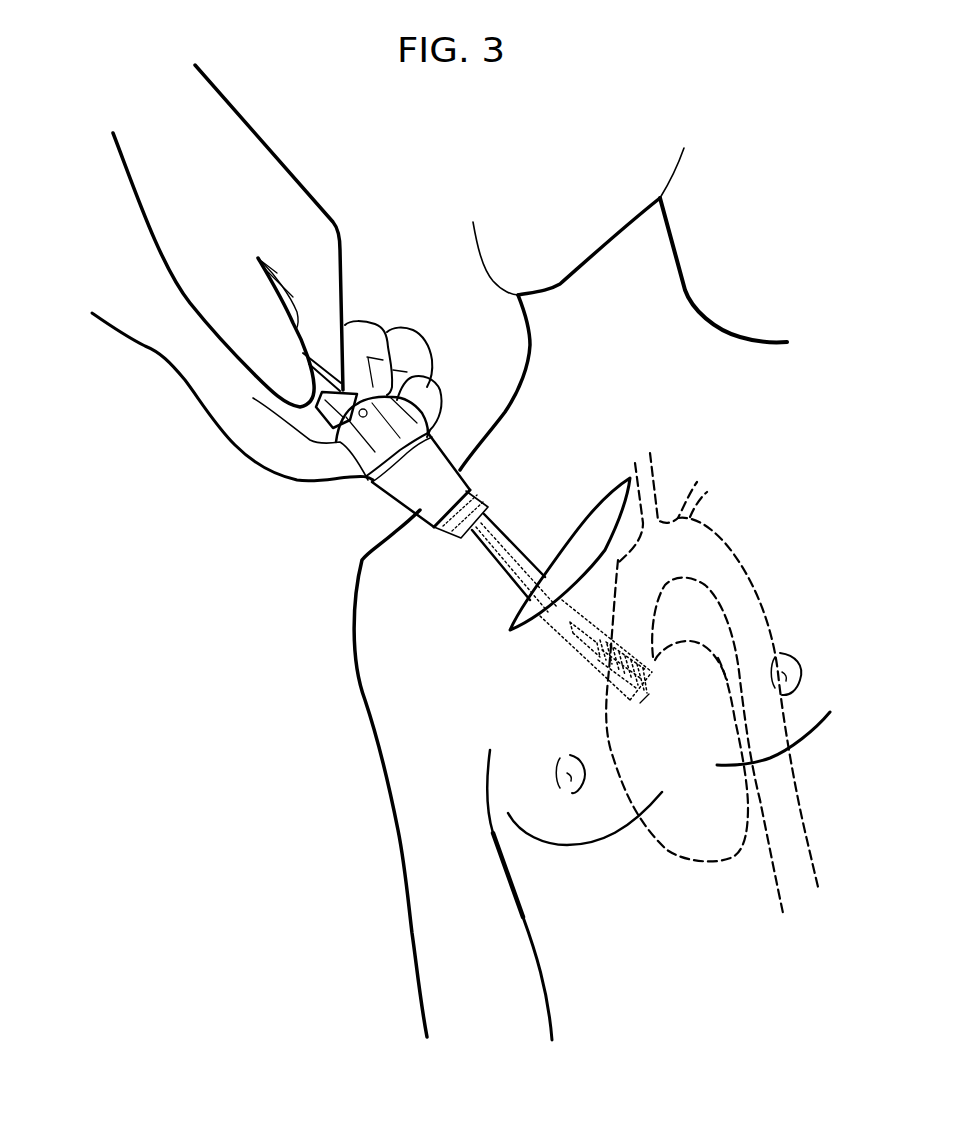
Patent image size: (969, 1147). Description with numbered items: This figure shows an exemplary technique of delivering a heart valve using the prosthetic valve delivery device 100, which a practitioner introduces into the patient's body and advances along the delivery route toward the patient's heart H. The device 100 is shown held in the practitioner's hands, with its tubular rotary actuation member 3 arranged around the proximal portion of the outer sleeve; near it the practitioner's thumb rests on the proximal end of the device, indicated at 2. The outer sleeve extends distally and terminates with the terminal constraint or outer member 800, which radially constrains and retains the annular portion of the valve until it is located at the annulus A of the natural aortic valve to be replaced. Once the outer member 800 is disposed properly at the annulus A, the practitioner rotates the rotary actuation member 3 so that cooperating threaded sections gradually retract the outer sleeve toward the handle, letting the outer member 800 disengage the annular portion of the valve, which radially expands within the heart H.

The prosthetic valve delivery device 100 is at (441, 530).
The plunger flange / handle 2 is at (323, 419).
The tubular rotary actuation member 3 is at (448, 454).
The terminal constraint or outer member 800 is at (591, 653).
The annulus A is at (640, 703).
The patient's heart H is at (700, 867).